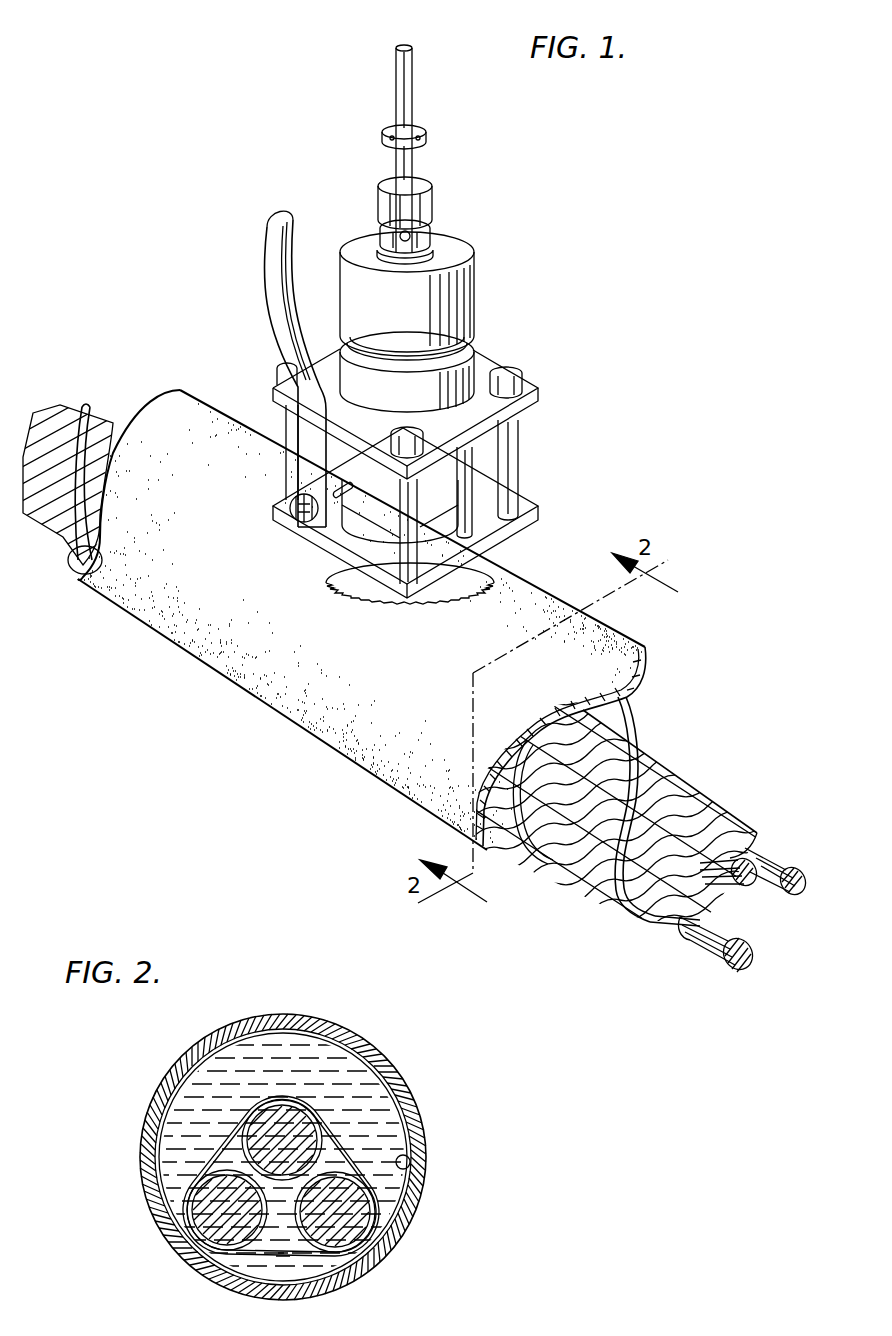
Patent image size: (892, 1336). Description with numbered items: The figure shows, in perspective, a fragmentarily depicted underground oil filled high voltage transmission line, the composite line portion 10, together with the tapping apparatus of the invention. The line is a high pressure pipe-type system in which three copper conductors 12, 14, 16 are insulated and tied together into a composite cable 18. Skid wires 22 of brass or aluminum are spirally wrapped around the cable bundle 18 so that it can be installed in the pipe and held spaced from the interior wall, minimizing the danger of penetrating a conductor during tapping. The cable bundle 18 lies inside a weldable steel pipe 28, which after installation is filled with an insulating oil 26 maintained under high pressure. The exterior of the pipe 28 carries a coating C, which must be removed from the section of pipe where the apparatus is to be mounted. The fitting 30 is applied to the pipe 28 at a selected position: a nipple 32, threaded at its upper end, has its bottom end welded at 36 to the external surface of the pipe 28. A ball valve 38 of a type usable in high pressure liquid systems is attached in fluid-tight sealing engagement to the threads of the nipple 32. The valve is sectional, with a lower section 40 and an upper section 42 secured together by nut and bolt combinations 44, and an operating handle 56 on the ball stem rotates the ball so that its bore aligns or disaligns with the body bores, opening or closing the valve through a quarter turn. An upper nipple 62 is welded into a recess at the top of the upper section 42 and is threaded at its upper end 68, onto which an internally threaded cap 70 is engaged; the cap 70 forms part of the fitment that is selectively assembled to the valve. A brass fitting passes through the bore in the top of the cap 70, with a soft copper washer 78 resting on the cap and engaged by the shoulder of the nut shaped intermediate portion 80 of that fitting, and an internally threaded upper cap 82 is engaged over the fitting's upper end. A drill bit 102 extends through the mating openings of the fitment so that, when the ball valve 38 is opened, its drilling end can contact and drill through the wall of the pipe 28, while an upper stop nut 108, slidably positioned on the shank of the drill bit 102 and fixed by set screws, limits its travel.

In FIG. 1, the composite line portion 10 is at (568, 586).
In FIG. 1, the conductor 12 is at (707, 907).
In FIG. 2, the conductor 12 is at (241, 1221).
In FIG. 1, the conductor 14 is at (738, 879).
In FIG. 2, the conductor 14 is at (296, 1151).
In FIG. 1, the conductor 16 is at (803, 884).
In FIG. 2, the conductor 16 is at (349, 1223).
In FIG. 1, the composite cable 18 is at (722, 792).
In FIG. 1, the skid wires 22 is at (83, 475).
In FIG. 2, the skid wires 22 is at (273, 1267).
In FIG. 2, the insulating oil 26 is at (338, 1078).
In FIG. 1, the pipe 28 is at (593, 720).
In FIG. 2, the pipe 28 is at (402, 1164).
In FIG. 1, the fitting 30 is at (495, 322).
In FIG. 1, the nipple 32 is at (478, 572).
In FIG. 1, the weld 36 is at (345, 590).
In FIG. 1, the ball valve 38 is at (545, 420).
In FIG. 1, the lower section 40 is at (530, 507).
In FIG. 1, the upper section 42 is at (558, 385).
In FIG. 1, the nut and bolt combinations 44 is at (518, 470).
In FIG. 1, the operating handle 56 is at (272, 243).
In FIG. 1, the upper nipple 62 is at (477, 356).
In FIG. 1, the threaded upper end 68 is at (350, 345).
In FIG. 1, the cap 70 is at (460, 287).
In FIG. 1, the soft copper washer 78 is at (436, 256).
In FIG. 1, the nut shaped intermediate portion 80 is at (432, 236).
In FIG. 1, the upper cap 82 is at (434, 196).
In FIG. 1, the drill bit 102 is at (412, 99).
In FIG. 1, the upper stop nut 108 is at (382, 138).
In FIG. 1, the coating C is at (363, 743).
In FIG. 2, the coating C is at (415, 1152).